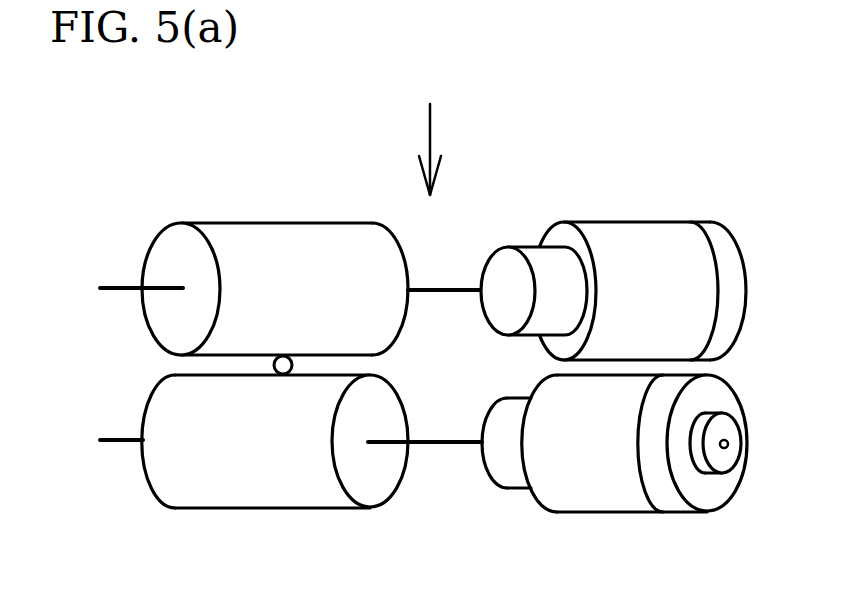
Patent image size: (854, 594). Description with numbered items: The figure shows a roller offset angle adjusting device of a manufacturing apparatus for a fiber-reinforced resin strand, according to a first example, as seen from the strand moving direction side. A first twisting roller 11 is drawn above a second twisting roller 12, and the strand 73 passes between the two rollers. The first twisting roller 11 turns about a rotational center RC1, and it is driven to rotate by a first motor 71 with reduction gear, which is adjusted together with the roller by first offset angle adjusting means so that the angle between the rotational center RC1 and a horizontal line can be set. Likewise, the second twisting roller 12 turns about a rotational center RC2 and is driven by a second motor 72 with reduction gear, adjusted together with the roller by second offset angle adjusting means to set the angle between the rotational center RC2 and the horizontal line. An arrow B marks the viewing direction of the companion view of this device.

The first twisting roller 11 is at (258, 222).
The second twisting roller 12 is at (205, 508).
The first motor with reduction gear 71 is at (673, 222).
The second motor with reduction gear 72 is at (650, 512).
The strand 73 is at (284, 356).
The rotational center of the first twisting roller RC1 is at (132, 288).
The rotational center of the second twisting roller RC2 is at (122, 440).
The arrow B is at (430, 135).